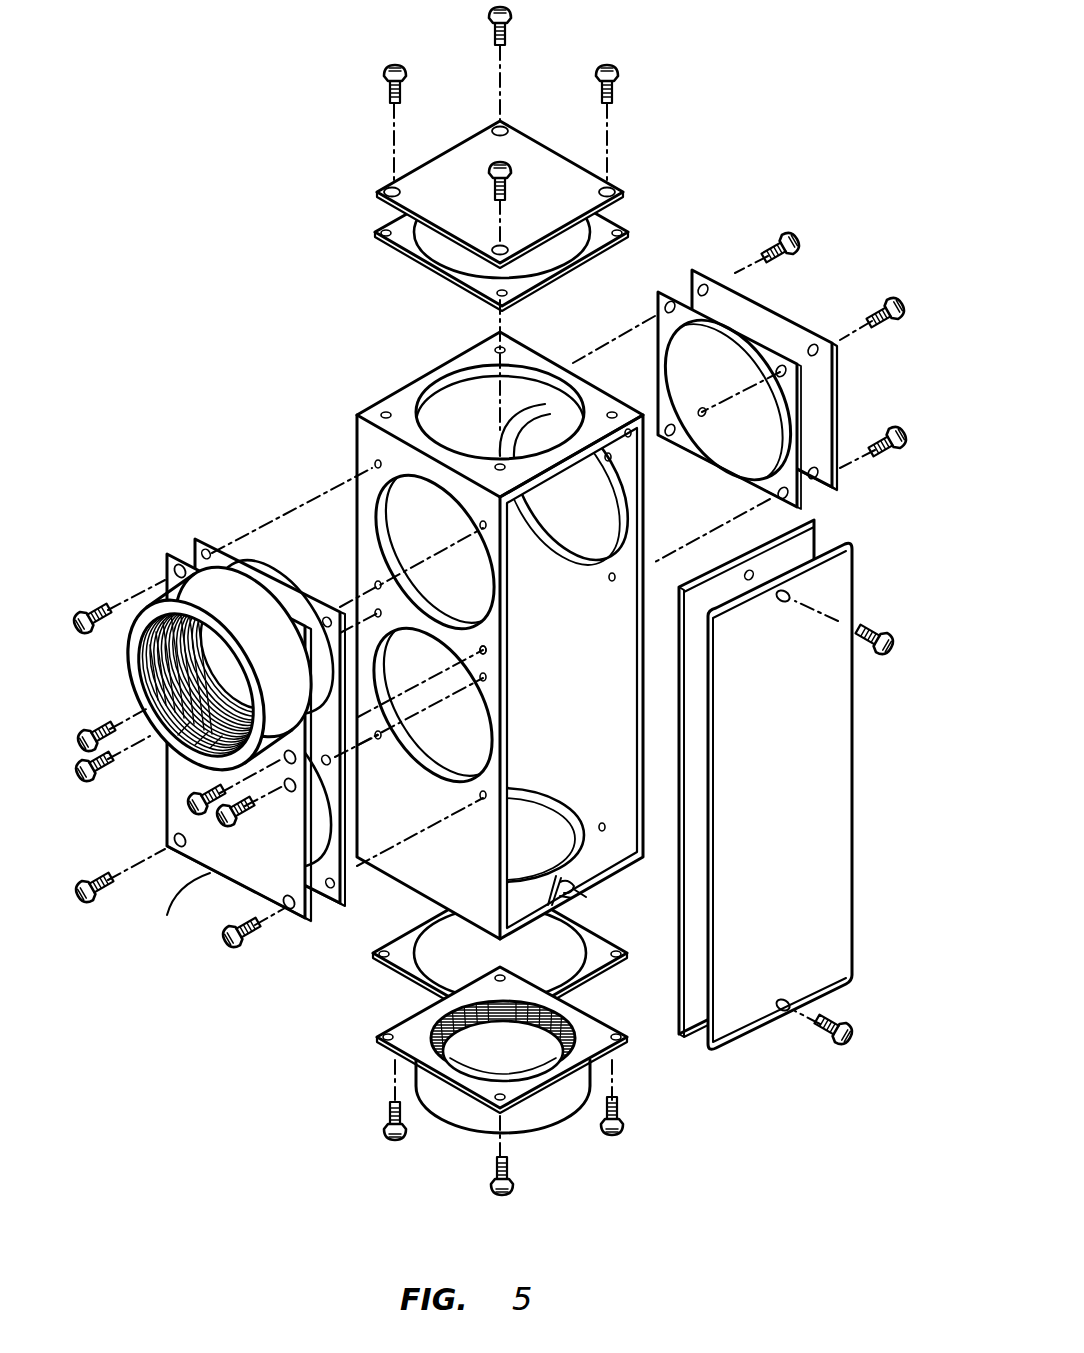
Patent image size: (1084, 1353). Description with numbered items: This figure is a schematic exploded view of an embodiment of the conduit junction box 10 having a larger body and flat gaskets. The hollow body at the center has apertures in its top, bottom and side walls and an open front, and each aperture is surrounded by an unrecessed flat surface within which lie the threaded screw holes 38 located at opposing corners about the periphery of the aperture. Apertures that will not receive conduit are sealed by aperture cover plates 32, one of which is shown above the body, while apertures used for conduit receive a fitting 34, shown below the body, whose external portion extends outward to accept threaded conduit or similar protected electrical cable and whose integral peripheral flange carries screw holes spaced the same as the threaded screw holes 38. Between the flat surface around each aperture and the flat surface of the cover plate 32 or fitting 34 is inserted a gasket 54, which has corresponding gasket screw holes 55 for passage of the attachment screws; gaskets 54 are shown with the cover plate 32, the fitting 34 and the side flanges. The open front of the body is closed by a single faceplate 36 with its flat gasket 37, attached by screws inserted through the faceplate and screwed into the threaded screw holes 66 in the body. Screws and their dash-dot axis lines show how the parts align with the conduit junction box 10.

The conduit junction box 10 is at (510, 601).
The aperture cover plate 32 is at (418, 148).
The fitting 34 is at (553, 1133).
The faceplate 36 is at (852, 872).
The flat gasket 37 is at (680, 1036).
The threaded screw hole 38 is at (462, 648).
The gasket 54 is at (613, 972).
The gasket screw hole 55 is at (630, 240).
The threaded screw hole 66 is at (572, 869).